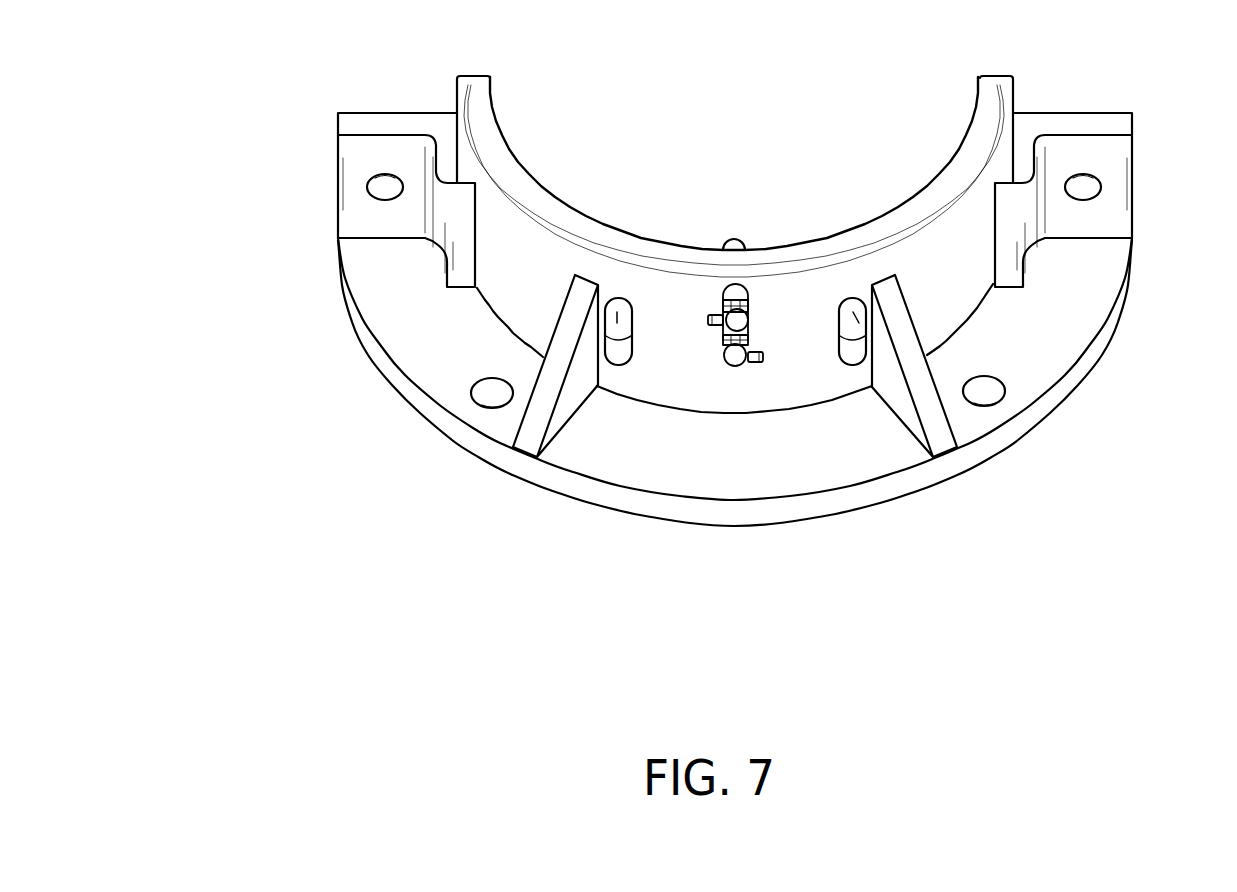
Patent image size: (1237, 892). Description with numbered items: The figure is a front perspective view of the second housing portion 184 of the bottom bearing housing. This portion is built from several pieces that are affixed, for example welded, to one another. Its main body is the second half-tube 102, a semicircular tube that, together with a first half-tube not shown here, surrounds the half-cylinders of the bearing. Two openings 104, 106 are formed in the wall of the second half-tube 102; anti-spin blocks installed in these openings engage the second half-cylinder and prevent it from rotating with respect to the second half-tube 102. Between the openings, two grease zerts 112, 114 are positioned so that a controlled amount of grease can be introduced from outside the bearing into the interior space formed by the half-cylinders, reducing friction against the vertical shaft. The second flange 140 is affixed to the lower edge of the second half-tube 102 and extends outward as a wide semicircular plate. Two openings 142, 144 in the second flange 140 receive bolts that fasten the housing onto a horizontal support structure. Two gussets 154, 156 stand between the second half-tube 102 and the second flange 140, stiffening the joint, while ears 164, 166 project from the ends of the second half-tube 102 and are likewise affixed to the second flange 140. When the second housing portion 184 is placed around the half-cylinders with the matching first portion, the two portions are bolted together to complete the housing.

The second half-tube 102 is at (512, 278).
The opening 104 is at (860, 323).
The opening 106 is at (630, 322).
The grease zert 112 is at (740, 322).
The grease zert 114 is at (725, 358).
The second flange 140 is at (628, 503).
The opening 142 is at (482, 393).
The opening 144 is at (1003, 388).
The gusset 154 is at (570, 398).
The gusset 156 is at (903, 401).
The ear 164 is at (360, 215).
The ear 166 is at (1105, 157).
The second housing portion 184 is at (316, 431).